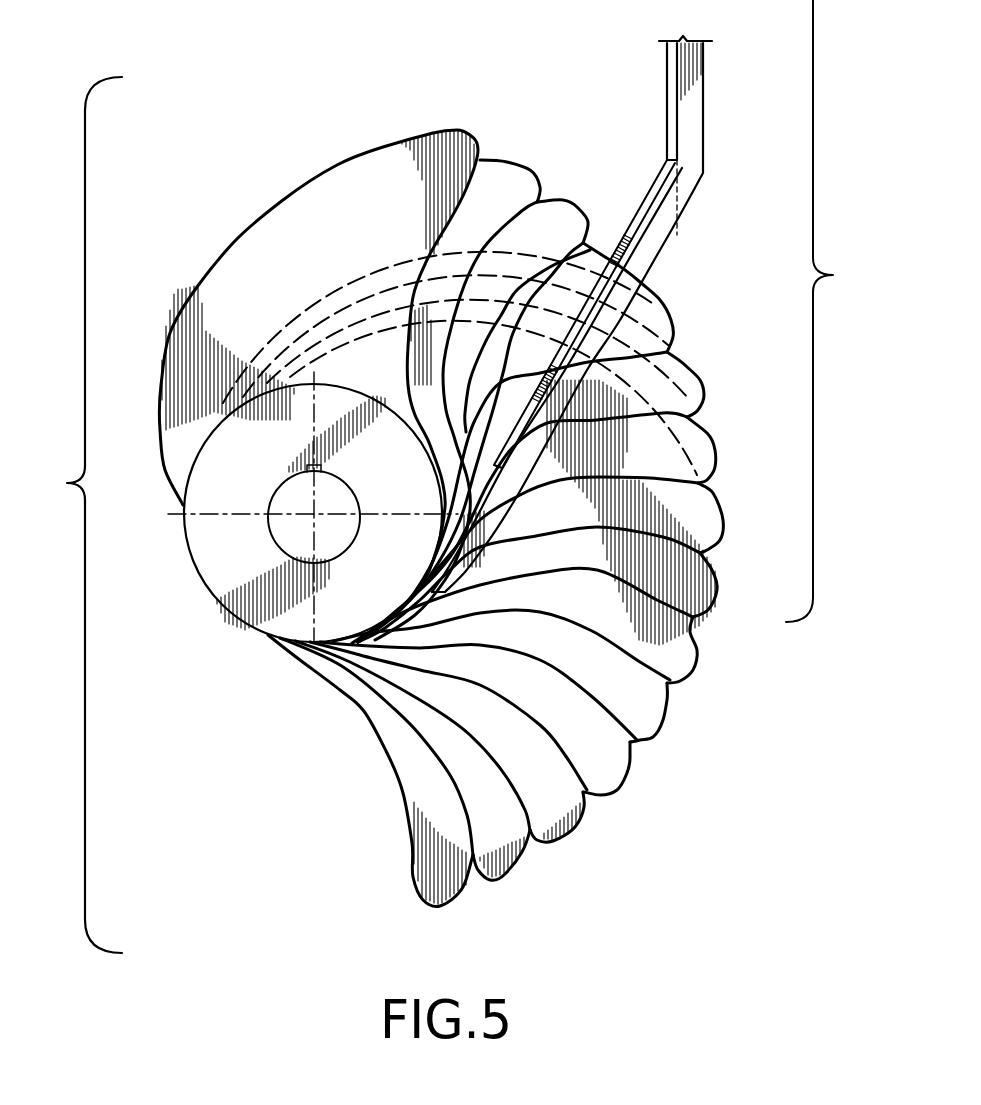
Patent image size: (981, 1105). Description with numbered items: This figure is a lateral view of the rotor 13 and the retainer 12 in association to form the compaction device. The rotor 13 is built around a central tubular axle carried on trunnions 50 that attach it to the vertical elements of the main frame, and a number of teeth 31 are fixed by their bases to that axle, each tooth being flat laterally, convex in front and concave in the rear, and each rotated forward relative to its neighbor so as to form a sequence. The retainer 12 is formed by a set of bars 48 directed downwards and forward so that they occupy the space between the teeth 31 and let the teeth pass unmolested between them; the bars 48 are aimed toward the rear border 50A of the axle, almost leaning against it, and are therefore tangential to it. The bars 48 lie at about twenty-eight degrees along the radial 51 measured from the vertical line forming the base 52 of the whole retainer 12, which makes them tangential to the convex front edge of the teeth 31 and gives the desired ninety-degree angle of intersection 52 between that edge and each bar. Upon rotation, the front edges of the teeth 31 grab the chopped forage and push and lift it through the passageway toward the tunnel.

The retainer 12 is at (834, 311).
The rotor 13 is at (71, 515).
The teeth 31 is at (701, 455).
The bars 48 is at (658, 238).
The trunnions 50 is at (310, 518).
The hub slot 50A is at (420, 575).
The radial 51 is at (660, 209).
The base of the retainer / angle of intersection 52 is at (681, 318).